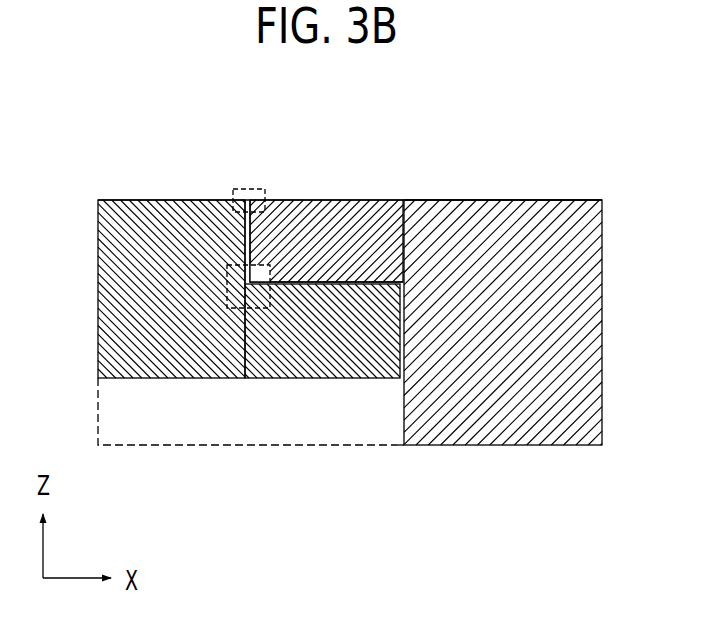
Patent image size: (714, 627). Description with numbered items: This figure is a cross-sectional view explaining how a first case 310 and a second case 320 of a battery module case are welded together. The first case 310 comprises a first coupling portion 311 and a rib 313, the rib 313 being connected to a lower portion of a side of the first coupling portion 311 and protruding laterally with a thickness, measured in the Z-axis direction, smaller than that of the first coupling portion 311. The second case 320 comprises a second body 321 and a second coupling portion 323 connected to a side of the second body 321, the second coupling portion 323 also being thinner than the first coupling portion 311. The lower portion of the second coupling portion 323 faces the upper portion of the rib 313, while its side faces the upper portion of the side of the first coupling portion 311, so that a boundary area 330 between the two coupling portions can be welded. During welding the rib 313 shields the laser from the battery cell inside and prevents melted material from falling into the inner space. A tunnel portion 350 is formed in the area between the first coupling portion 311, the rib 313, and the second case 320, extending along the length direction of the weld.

The first case 310 is at (158, 194).
The first coupling portion 311 is at (157, 378).
The rib 313 is at (312, 378).
The second case 320 is at (513, 194).
The second body 321 is at (440, 199).
The second coupling portion 323 is at (363, 199).
The boundary area 330 is at (250, 188).
The tunnel portion 350 is at (237, 308).